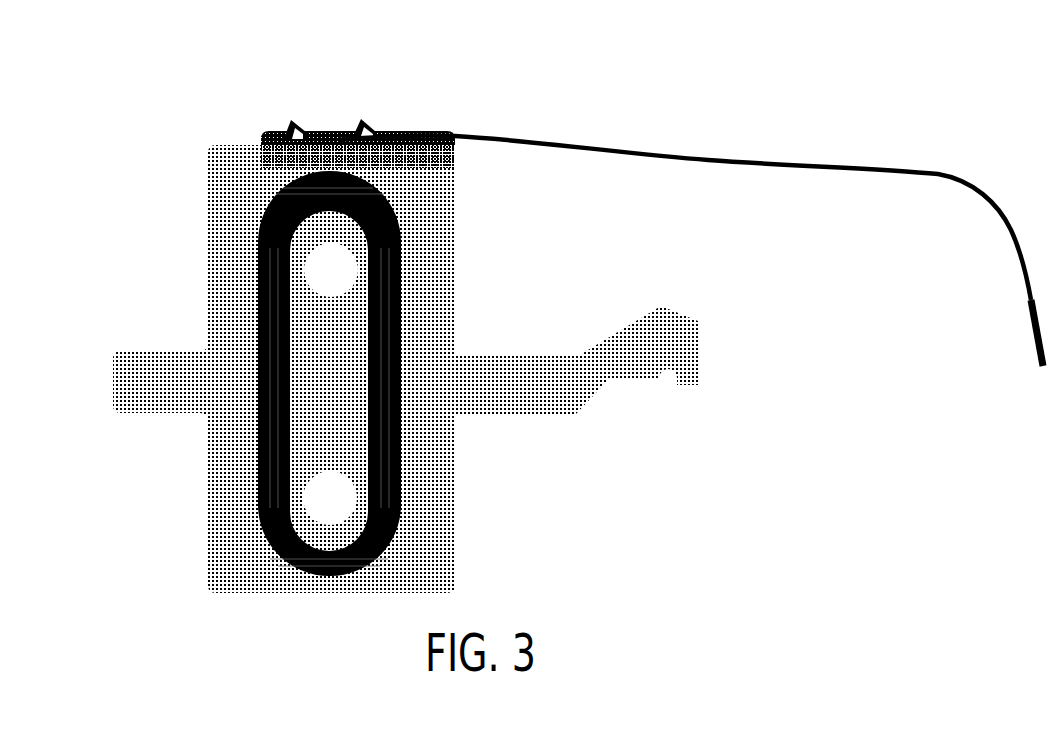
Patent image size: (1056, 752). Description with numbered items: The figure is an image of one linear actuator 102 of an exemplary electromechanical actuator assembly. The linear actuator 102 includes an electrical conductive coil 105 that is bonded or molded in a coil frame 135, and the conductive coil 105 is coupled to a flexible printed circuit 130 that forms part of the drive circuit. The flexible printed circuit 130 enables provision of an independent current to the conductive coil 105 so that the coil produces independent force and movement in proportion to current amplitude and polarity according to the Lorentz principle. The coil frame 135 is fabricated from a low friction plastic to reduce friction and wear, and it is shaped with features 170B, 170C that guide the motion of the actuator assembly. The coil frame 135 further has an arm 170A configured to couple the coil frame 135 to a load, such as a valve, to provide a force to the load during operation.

The linear actuator 102 is at (574, 315).
The electrical conductive coil 105 is at (263, 353).
The flexible printed circuit 130 is at (747, 153).
The coil frame 135 is at (452, 340).
The arm 170A is at (672, 362).
The feature 170B is at (517, 390).
The feature 170C is at (157, 392).